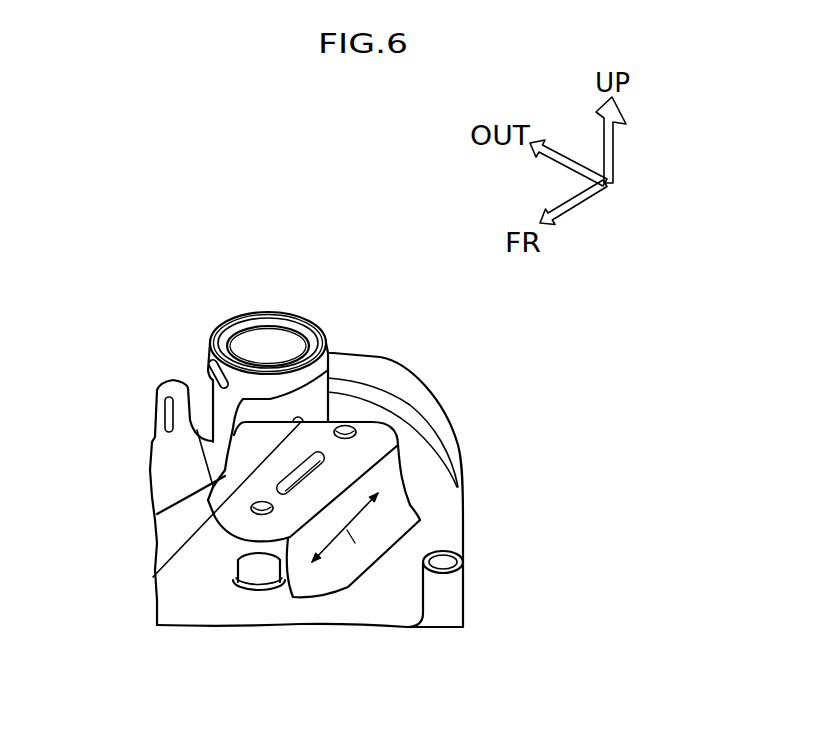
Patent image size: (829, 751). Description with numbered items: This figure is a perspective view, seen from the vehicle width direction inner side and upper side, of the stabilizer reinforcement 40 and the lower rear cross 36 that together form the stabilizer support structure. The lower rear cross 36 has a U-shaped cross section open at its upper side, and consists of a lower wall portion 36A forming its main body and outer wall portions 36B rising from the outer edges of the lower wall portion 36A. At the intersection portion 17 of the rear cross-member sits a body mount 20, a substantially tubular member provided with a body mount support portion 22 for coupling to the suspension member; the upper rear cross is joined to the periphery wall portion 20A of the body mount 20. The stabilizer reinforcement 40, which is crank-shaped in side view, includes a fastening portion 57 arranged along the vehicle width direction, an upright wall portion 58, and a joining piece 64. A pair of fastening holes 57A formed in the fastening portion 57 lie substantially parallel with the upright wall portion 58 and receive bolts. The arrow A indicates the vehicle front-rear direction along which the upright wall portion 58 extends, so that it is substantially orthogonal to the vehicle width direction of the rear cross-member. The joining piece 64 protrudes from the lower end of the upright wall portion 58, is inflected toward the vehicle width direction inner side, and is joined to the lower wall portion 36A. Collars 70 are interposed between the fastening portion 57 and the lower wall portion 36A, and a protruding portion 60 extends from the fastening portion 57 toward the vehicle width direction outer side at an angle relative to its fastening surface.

The intersection portion 17 is at (362, 401).
The body mount 20 is at (270, 324).
The periphery wall portion 20A is at (212, 400).
The body mount support portion 22 is at (218, 296).
The lower rear cross 36 is at (392, 632).
The lower wall portion 36A is at (360, 608).
The outer wall portion 36B is at (163, 543).
The stabilizer reinforcement 40 is at (454, 434).
The fastening portion 57 is at (382, 416).
The fastening hole 57A is at (411, 456).
The upright wall portion 58 is at (390, 486).
The protruding portion 60 is at (157, 514).
The joining piece 64 is at (405, 520).
The collar 70 is at (260, 568).